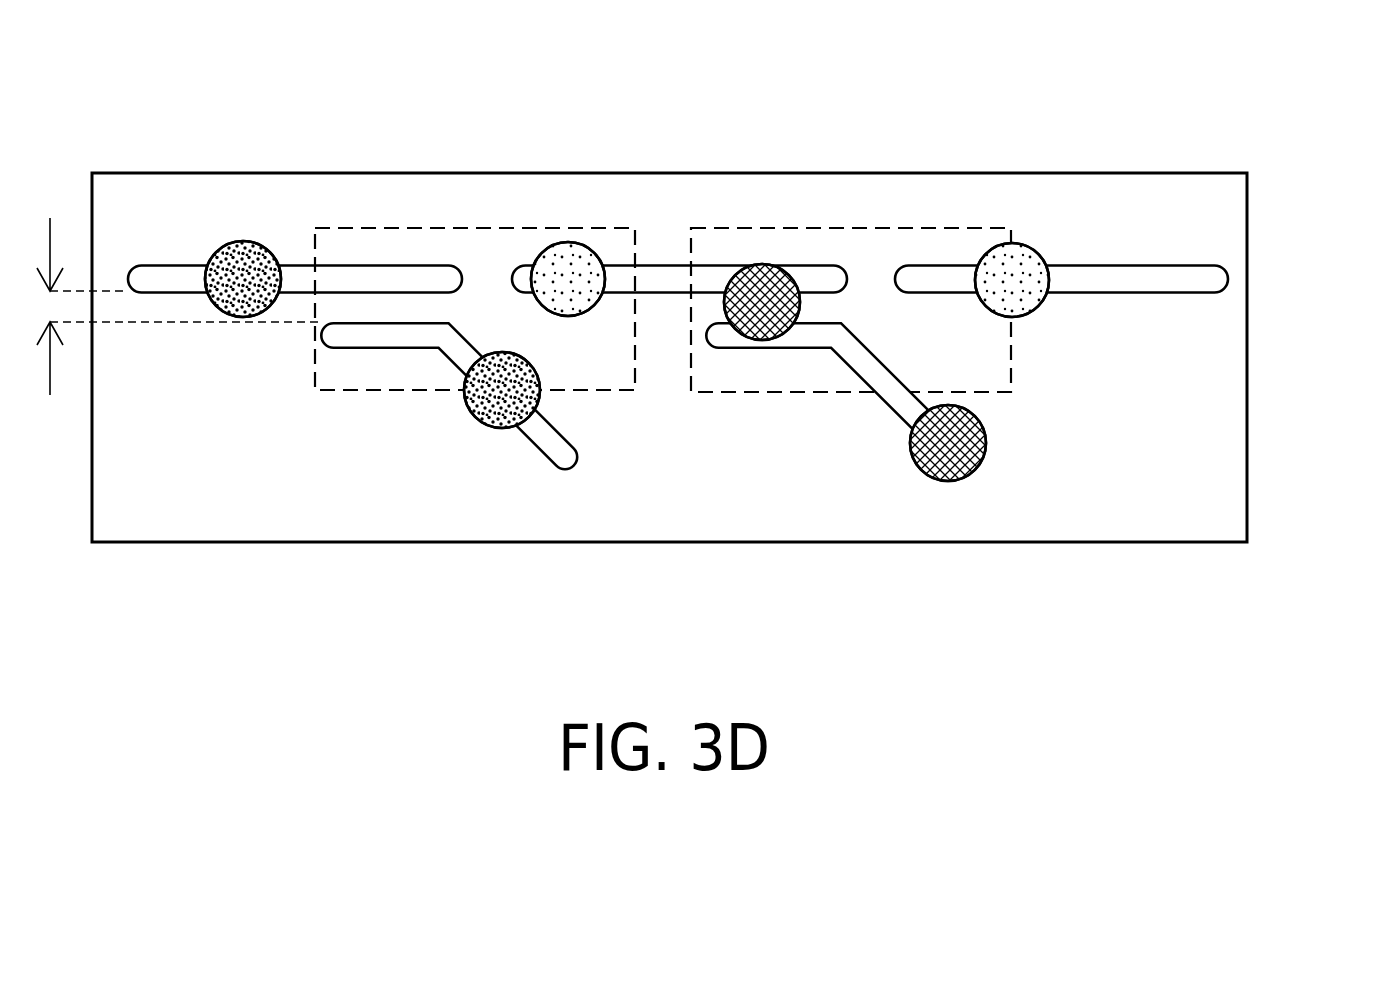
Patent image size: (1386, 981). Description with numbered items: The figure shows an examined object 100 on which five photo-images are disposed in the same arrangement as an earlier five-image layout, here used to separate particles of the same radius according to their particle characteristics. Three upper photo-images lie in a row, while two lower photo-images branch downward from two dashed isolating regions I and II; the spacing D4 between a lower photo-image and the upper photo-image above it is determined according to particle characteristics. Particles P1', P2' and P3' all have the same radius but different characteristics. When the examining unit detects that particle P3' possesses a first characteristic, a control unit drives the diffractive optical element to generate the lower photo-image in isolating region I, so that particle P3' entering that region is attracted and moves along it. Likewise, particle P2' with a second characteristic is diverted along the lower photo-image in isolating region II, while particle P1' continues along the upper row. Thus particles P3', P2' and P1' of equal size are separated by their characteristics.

The examined object 100 is at (1247, 193).
The isolating region I is at (473, 228).
The isolating region II is at (850, 228).
The distance D4 is at (162, 306).
The particle P1' is at (790, 196).
The particle P2' is at (867, 346).
The particle P3' is at (372, 346).